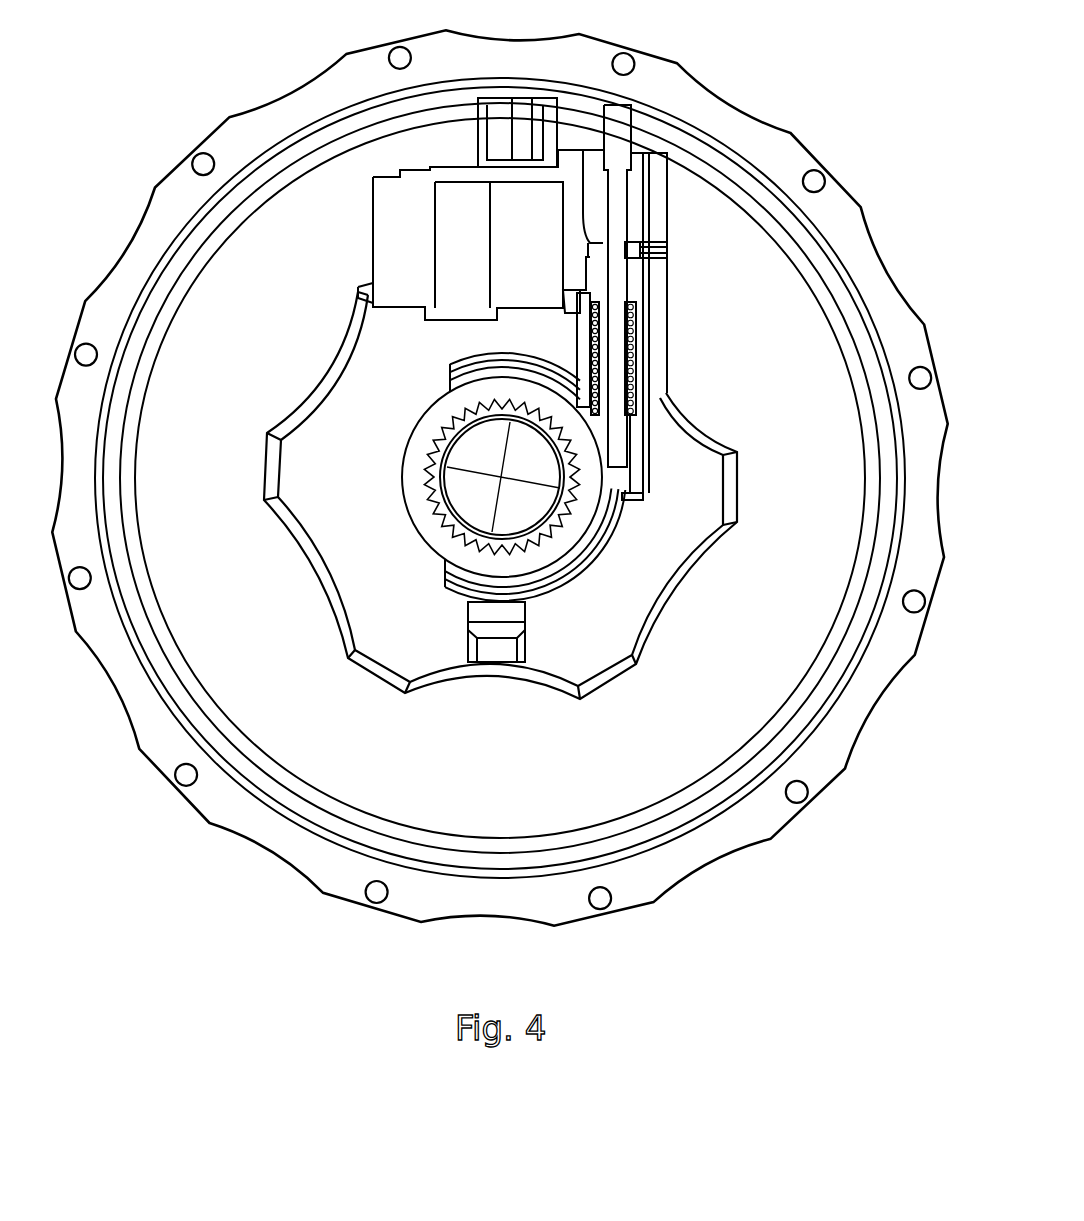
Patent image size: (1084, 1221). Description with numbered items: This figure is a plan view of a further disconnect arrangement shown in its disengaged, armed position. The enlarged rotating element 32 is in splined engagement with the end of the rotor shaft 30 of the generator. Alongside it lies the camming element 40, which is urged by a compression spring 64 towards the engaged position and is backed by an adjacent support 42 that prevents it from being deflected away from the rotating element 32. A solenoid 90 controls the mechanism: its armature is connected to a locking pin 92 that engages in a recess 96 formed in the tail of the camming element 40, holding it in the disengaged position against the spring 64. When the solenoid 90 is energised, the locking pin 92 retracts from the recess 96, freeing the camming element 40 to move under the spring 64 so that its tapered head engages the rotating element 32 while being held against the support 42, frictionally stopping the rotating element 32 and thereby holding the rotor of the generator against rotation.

The rotor shaft 30 is at (517, 512).
The rotating element 32 is at (447, 540).
The camming element 40 is at (610, 333).
The support 42 is at (637, 450).
The compression spring 64 is at (632, 378).
The solenoid 90 is at (385, 240).
The locking pin 92 is at (590, 250).
The recess 96 is at (612, 243).